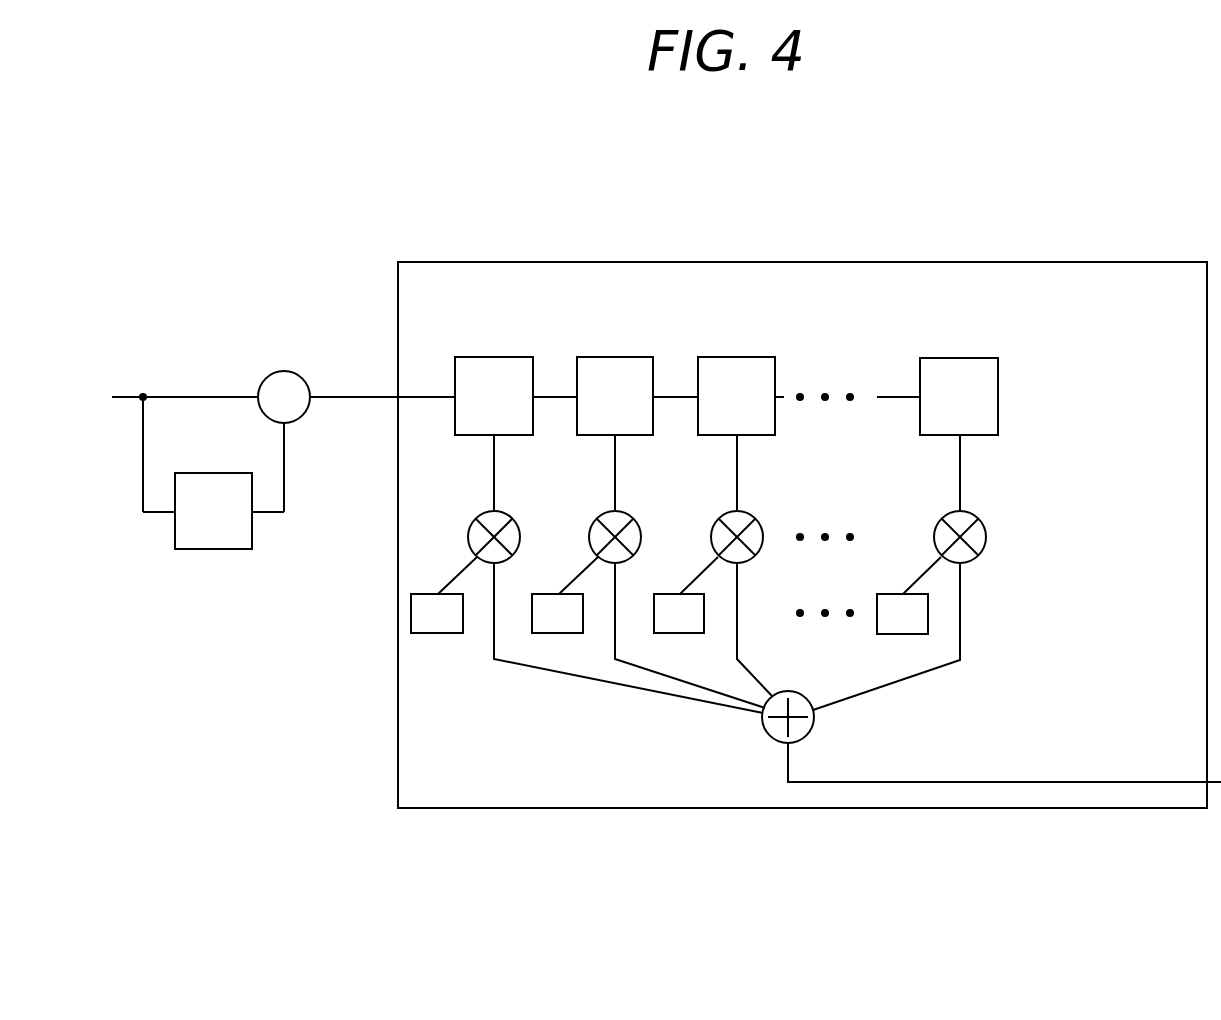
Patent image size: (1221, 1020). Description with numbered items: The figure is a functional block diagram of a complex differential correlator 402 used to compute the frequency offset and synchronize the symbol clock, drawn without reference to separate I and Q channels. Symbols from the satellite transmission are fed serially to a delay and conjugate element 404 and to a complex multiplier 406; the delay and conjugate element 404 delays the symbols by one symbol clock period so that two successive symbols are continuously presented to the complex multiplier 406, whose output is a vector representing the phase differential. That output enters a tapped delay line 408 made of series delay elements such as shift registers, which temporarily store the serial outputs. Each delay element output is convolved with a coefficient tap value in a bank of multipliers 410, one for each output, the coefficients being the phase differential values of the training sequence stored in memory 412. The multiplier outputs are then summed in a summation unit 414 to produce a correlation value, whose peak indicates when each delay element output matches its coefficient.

The differential correlator 402 is at (1080, 262).
The delay and conjugate element 404 is at (212, 550).
The complex multiplier 406 is at (283, 371).
The tapped delay line 408 is at (1040, 397).
The bank of multipliers 410 is at (1038, 537).
The memory 412 is at (352, 613).
The adder 414 is at (770, 737).